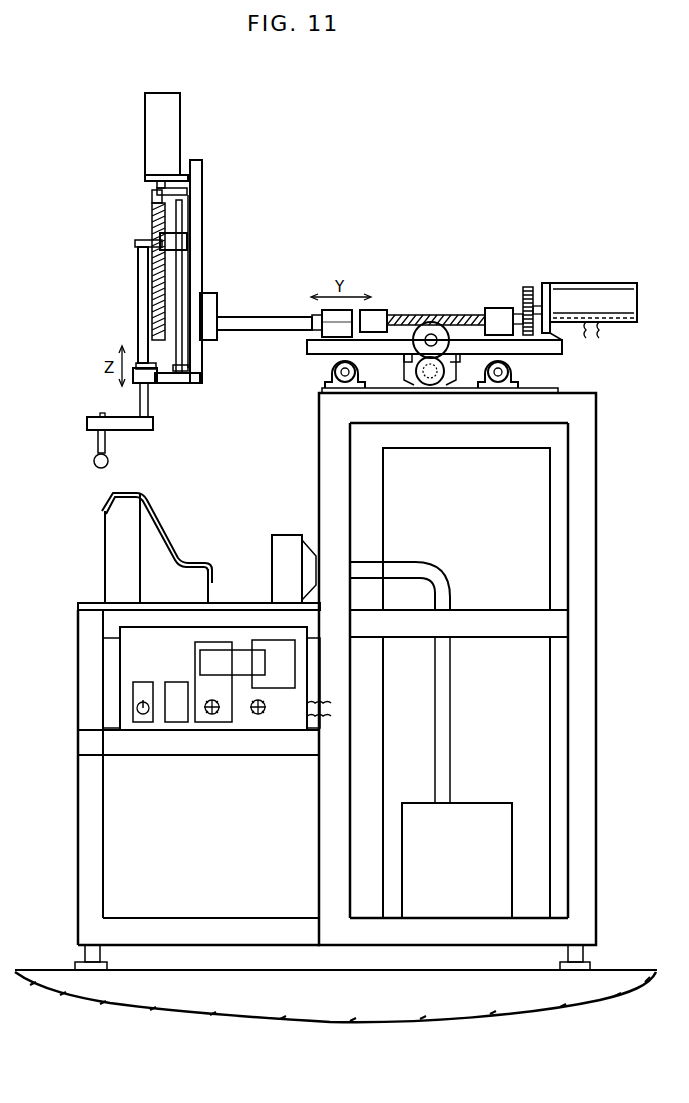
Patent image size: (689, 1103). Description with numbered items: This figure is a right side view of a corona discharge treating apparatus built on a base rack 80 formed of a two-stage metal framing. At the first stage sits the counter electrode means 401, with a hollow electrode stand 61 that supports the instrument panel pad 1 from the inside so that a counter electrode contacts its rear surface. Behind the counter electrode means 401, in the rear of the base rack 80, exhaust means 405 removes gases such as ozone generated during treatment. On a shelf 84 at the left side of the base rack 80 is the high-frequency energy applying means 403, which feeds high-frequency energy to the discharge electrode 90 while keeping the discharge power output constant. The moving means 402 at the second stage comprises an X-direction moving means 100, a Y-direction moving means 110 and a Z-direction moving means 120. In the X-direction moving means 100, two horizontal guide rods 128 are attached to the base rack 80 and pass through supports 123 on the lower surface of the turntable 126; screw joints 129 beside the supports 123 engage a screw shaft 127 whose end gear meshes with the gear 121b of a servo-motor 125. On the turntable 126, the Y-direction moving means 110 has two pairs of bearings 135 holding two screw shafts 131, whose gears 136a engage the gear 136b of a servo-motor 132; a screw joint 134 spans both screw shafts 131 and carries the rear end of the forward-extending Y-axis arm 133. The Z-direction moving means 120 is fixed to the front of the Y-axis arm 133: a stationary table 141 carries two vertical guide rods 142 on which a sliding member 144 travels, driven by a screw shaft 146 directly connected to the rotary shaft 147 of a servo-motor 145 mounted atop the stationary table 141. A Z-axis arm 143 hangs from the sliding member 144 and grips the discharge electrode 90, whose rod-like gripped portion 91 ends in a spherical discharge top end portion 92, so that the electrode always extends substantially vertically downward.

The instrument panel pad 1 is at (162, 525).
The electrode stand 61 is at (110, 569).
The base rack 80 is at (597, 702).
The shelf 84 is at (148, 757).
The discharge electrode 90 is at (98, 448).
The gripped portion 91 is at (95, 437).
The discharge top end portion 92 is at (108, 461).
The X-direction moving means 100 is at (432, 395).
The Y-direction moving means 110 is at (260, 317).
The Z-direction moving means 120 is at (196, 205).
The gear 121b is at (448, 352).
The supports 123 is at (320, 360).
The servo-motor 125 is at (432, 320).
The turntable 126 is at (318, 348).
The screw shaft 127 is at (418, 372).
The guide rods 128 is at (346, 390).
The screw joints 129 is at (424, 393).
The screw shafts 131 is at (466, 312).
The servo-motor 132 is at (600, 283).
The Y-axis arm 133 is at (228, 340).
The screw joint 134 is at (372, 312).
The bearings 135 is at (312, 325).
The gears 136a is at (560, 345).
The gear 136b is at (529, 287).
The stationary table 141 is at (202, 170).
The guide rods 142 is at (182, 268).
The Z-axis arm 143 is at (140, 285).
The sliding member 144 is at (187, 240).
The servo-motor 145 is at (181, 126).
The screw shaft 146 is at (152, 226).
The rotary shaft 147 is at (152, 197).
The counter electrode means 401 is at (92, 523).
The moving means 402 is at (96, 280).
The high-frequency energy applying means 403 is at (208, 775).
The exhaust means 405 is at (276, 525).